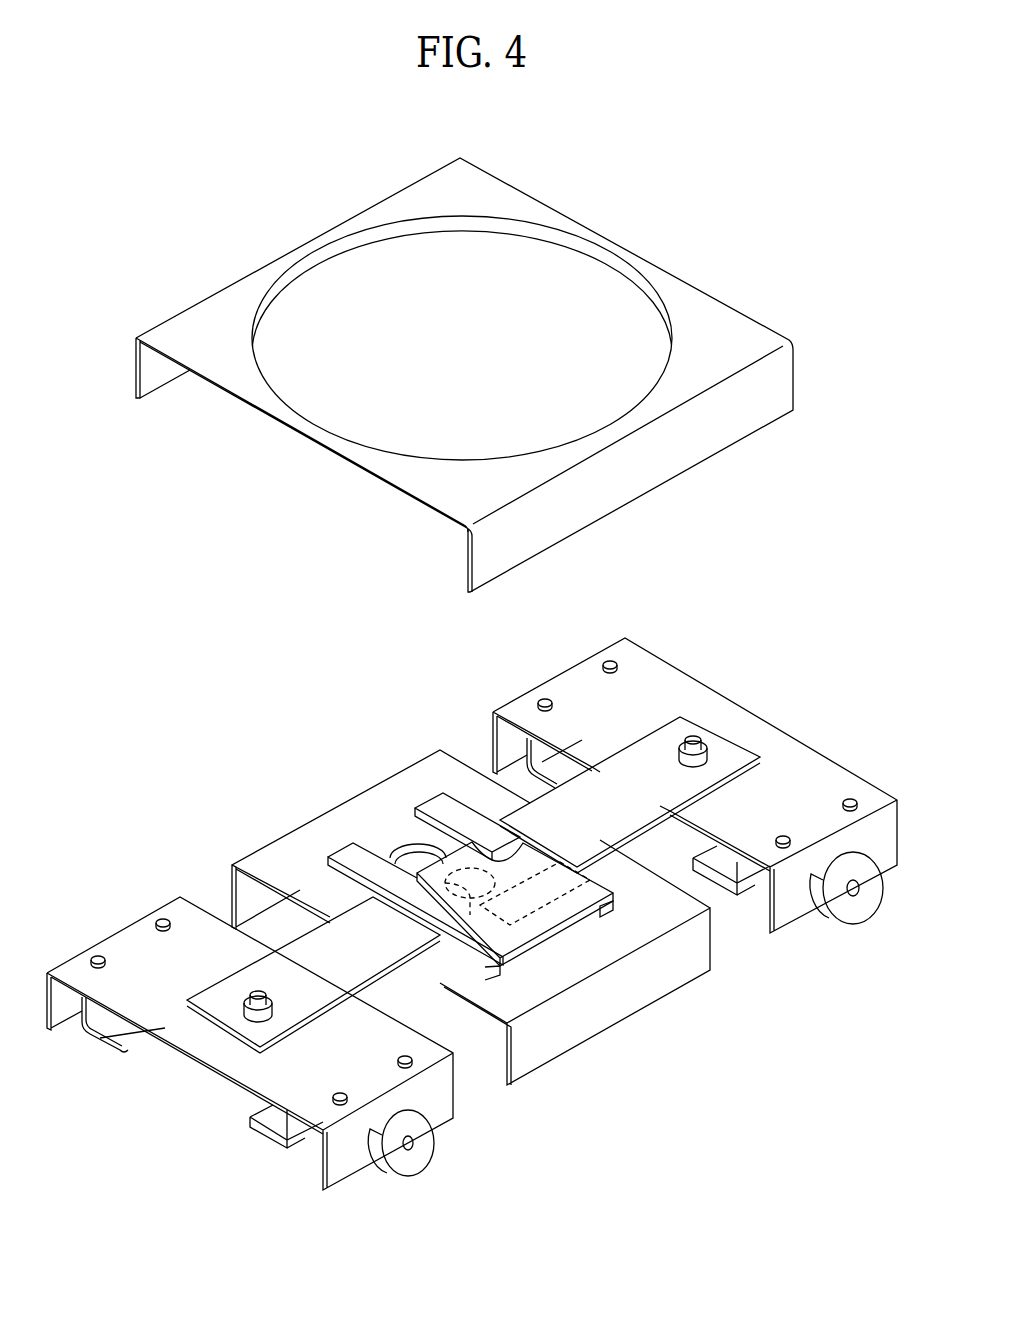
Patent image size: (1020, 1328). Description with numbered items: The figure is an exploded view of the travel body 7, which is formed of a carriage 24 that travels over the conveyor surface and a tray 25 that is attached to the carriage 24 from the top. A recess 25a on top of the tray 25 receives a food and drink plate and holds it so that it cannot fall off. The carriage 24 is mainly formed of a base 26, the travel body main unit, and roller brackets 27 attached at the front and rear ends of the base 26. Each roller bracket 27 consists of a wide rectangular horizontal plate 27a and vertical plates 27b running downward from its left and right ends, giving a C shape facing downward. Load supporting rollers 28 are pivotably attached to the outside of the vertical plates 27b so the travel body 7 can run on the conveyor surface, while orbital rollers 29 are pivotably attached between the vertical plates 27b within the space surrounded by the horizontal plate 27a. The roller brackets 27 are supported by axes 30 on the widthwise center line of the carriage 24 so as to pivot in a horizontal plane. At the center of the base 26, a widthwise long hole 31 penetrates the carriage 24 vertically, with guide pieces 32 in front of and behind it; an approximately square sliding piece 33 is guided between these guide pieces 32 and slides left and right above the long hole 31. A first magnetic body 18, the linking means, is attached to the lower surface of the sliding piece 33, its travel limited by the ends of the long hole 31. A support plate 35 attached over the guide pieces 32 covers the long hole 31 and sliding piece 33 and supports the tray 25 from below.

The travel body 7 is at (240, 193).
The first magnetic body 18 is at (470, 870).
The carriage 24 is at (314, 753).
The tray 25 is at (676, 256).
The recess 25a is at (555, 265).
The base 26 is at (615, 1000).
The roller bracket 27 is at (805, 740).
The horizontal plate 27a is at (648, 673).
The vertical plate 27b is at (515, 743).
The load supporting roller 28 is at (852, 912).
The orbital roller 29 is at (752, 895).
The axis 30 is at (700, 742).
The long hole 31 is at (352, 855).
The guide piece 32 is at (437, 805).
The sliding piece 33 is at (490, 865).
The support plate 35 is at (577, 883).